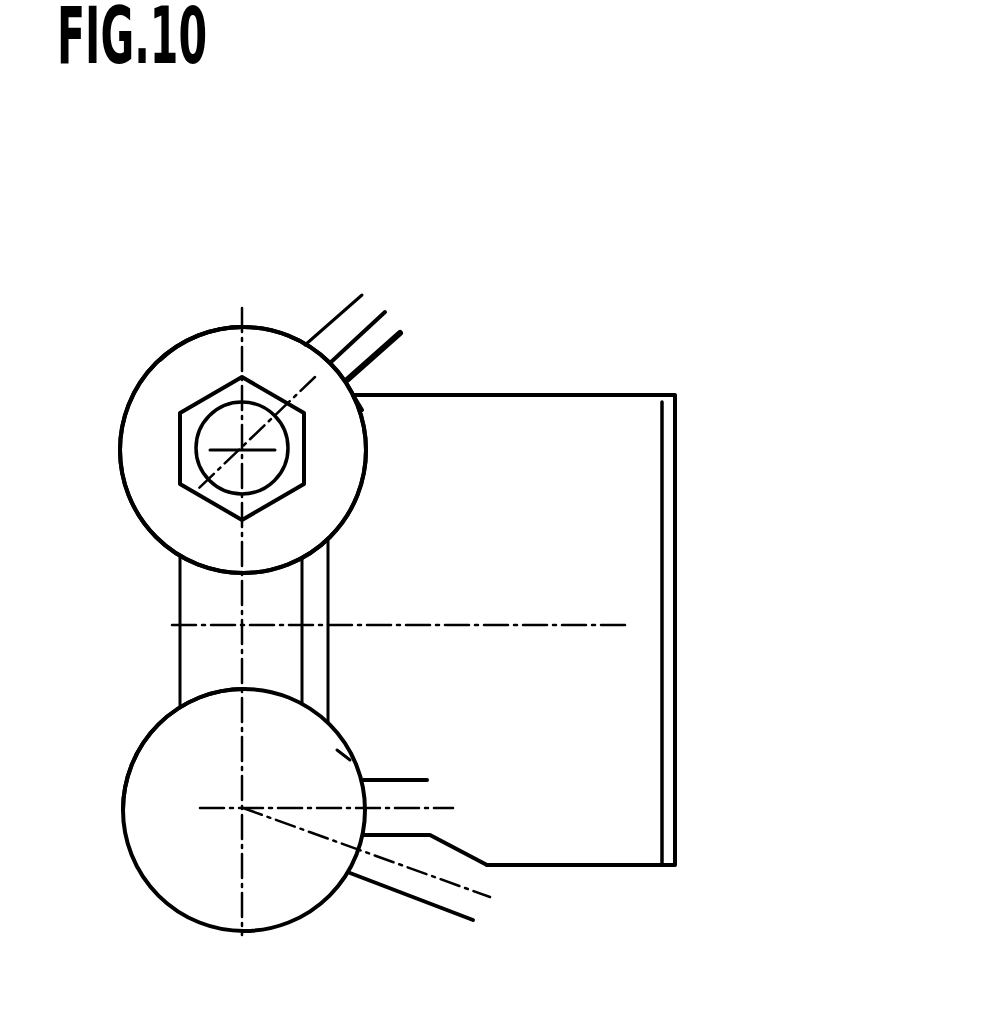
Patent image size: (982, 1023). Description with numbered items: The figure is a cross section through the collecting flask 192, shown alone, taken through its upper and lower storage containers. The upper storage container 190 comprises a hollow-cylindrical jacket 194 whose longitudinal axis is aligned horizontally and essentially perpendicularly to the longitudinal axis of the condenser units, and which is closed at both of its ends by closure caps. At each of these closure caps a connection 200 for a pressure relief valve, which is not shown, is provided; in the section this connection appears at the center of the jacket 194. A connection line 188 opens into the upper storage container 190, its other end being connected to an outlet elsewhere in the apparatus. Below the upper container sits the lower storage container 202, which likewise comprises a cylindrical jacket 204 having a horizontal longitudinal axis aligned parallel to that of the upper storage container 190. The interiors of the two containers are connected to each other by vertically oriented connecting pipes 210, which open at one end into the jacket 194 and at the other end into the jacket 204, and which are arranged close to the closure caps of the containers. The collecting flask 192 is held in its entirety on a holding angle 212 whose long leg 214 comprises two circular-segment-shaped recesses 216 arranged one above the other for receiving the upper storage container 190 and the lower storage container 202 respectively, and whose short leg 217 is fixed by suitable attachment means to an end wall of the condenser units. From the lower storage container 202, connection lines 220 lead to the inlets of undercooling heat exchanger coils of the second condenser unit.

The connection line 188 is at (338, 312).
The upper storage container 190 is at (275, 352).
The collecting flask 192 is at (100, 380).
The hollow-cylindrical jacket 194 is at (157, 355).
The connection for a pressure relief valve 200 is at (203, 487).
The lower storage container 202 is at (162, 868).
The cylindrical jacket 204 is at (127, 788).
The connecting pipe 210 is at (210, 597).
The holding angle 212 is at (662, 386).
The long leg 214 is at (552, 430).
The circular-segment-shaped recess 216 is at (360, 445).
The short leg 217 is at (672, 560).
The connection line 220 is at (375, 810).